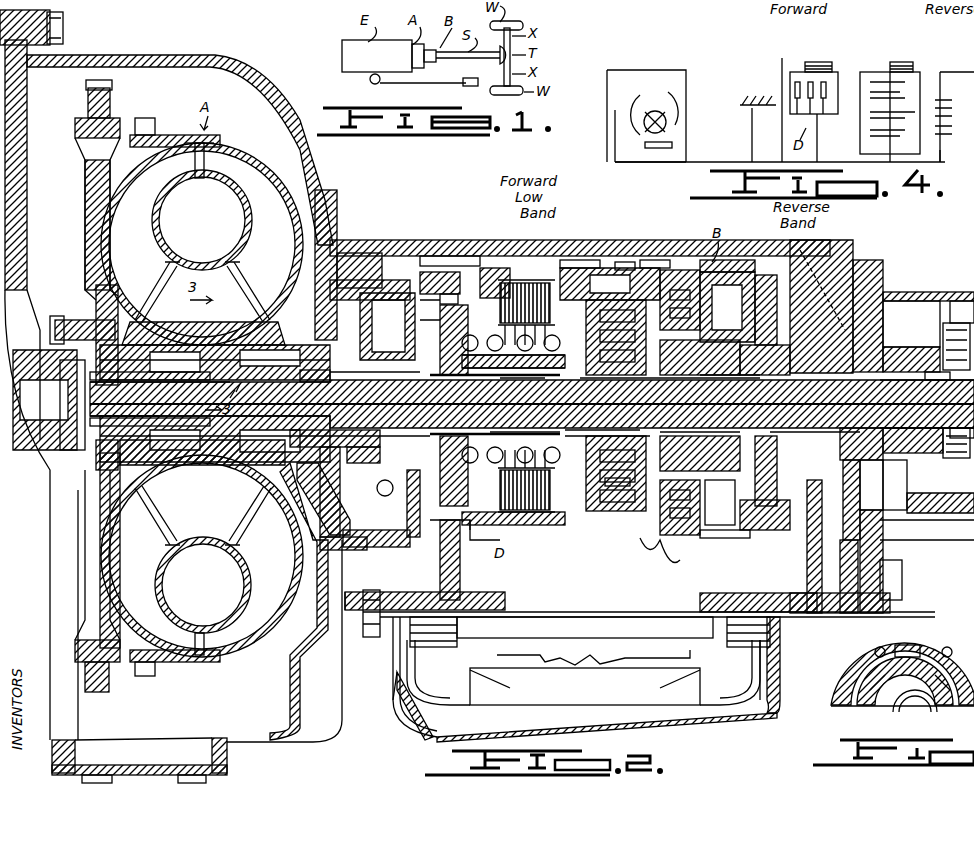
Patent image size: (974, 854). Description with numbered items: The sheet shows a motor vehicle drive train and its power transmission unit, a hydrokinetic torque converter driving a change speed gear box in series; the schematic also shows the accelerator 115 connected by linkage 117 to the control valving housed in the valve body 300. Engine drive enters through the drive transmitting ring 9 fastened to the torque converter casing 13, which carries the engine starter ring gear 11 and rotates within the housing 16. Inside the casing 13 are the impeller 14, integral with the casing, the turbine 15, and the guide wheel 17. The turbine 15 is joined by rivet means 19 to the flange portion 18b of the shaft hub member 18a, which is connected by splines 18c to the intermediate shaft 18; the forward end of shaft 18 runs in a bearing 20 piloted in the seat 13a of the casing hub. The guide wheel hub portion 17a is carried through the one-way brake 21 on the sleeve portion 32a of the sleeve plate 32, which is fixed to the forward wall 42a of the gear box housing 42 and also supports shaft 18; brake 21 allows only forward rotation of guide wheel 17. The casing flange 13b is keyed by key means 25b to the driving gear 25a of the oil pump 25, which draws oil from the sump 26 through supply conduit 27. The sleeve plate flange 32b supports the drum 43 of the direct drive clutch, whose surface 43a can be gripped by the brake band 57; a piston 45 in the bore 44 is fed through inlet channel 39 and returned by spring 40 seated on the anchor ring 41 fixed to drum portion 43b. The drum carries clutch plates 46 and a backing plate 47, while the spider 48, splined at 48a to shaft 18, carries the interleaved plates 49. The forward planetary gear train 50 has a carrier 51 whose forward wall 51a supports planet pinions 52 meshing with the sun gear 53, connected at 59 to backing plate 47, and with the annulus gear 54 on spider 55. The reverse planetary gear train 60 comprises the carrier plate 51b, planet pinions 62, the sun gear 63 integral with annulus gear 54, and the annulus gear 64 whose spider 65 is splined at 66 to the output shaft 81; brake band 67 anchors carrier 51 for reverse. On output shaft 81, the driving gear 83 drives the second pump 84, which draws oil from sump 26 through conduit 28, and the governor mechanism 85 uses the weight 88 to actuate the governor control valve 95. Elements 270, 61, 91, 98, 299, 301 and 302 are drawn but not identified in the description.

In FIG. 1, the engine starter 270 is at (372, 82).
In FIG. 1, the linkage 117 is at (420, 83).
In FIG. 1, the accelerator pedal 115 is at (472, 88).
In FIG. 4, the impeller 14 is at (670, 94).
In FIG. 2, the impeller 14 is at (268, 212).
In FIG. 4, the guide wheel 17 is at (655, 116).
In FIG. 2, the guide wheel 17 is at (212, 241).
In FIG. 4, the one-way brake device 21 is at (672, 146).
In FIG. 2, the one-way brake device 21 is at (185, 420).
In FIG. 4, the sleeve portion 32a is at (735, 130).
In FIG. 4, the intermediate shaft 18 is at (668, 160).
In FIG. 3, the intermediate shaft 18 is at (905, 706).
In FIG. 2, the intermediate shaft 18 is at (532, 404).
In FIG. 4, the brake band 57 is at (808, 60).
In FIG. 2, the brake band 57 is at (505, 268).
In FIG. 4, the backing plate 47 is at (826, 124).
In FIG. 2, the backing plate 47 is at (616, 486).
In FIG. 4, the planet pinion carrier 51 is at (870, 72).
In FIG. 2, the planet pinion carrier 51 is at (592, 295).
In FIG. 4, the forward planetary gear train 50 is at (883, 74).
In FIG. 2, the forward planetary gear train 50 is at (632, 310).
In FIG. 4, the brake band 67 is at (918, 62).
In FIG. 4, the annulus gear 54 is at (890, 92).
In FIG. 2, the annulus gear 54 is at (694, 486).
In FIG. 4, the planet pinion gears 52 is at (895, 114).
In FIG. 2, the planet pinion gears 52 is at (630, 388).
In FIG. 4, the sun gear element 53 is at (890, 136).
In FIG. 2, the sun gear element 53 is at (617, 473).
In FIG. 4, the annulus gear 64 is at (958, 60).
In FIG. 2, the annulus gear 64 is at (725, 543).
In FIG. 4, the planet pinion gears 62 is at (951, 117).
In FIG. 2, the planet pinion gears 62 is at (720, 388).
In FIG. 4, the sun gear element 63 is at (945, 162).
In FIG. 2, the sun gear element 63 is at (710, 502).
In FIG. 3, the guide wheel hub portion 17a is at (850, 655).
In FIG. 2, the guide wheel hub portion 17a is at (200, 300).
In FIG. 3, the sleeve plate 32 is at (940, 708).
In FIG. 2, the sleeve plate 32 is at (444, 330).
In FIG. 2, the engine starter ring gear 11 is at (95, 97).
In FIG. 2, the housing 16 is at (258, 70).
In FIG. 2, the turbine 15 is at (150, 188).
In FIG. 2, the torque converter casing 13 is at (100, 245).
In FIG. 2, the drive transmitting ring 9 is at (110, 310).
In FIG. 2, the bearing 20 is at (49, 400).
In FIG. 2, the shaft hub member 18a is at (160, 389).
In FIG. 2, the splines 18c is at (125, 407).
In FIG. 2, the sleeve-like flange portion 13b is at (322, 383).
In FIG. 2, the seat 13a is at (95, 462).
In FIG. 2, the flange portion 18b is at (95, 476).
In FIG. 2, the rivet means 19 is at (170, 478).
In FIG. 2, the second oil pump 84 is at (860, 258).
In FIG. 2, the governor mechanism 85 is at (940, 318).
In FIG. 2, the governor weight 88 is at (942, 336).
In FIG. 2, the oil pump 25 is at (352, 290).
In FIG. 2, the driving gear 25a is at (387, 326).
In FIG. 2, the gear box housing 42 is at (428, 256).
In FIG. 2, the forward wall 42a is at (450, 263).
In FIG. 2, the piston receiving bore 44 is at (450, 287).
In FIG. 2, the drum peripheral surface 43a is at (488, 275).
In FIG. 2, the spider element 48 is at (516, 364).
In FIG. 2, the carrier forward wall 51a is at (575, 296).
In FIG. 2, the planet pinion carrier plate 51b is at (660, 296).
In FIG. 2, the reverse planetary gear train 60 is at (690, 325).
In FIG. 2, the hub 61 is at (771, 325).
In FIG. 2, the key means 25b is at (375, 385).
In FIG. 2, the sleeve-like flange 32b is at (380, 418).
In FIG. 2, the spring 40 is at (495, 383).
In FIG. 2, the inlet channel 39 is at (490, 436).
In FIG. 2, the anchor ring 41 is at (522, 384).
In FIG. 2, the drum portion 43b is at (525, 416).
In FIG. 2, the splines 48a is at (602, 415).
In FIG. 2, the drive connection 59 is at (607, 418).
In FIG. 2, the spider element 55 is at (700, 416).
In FIG. 2, the supply conduit 27 is at (430, 570).
In FIG. 2, the splines 66 is at (815, 418).
In FIG. 2, the pump driving gear 83 is at (927, 384).
In FIG. 2, the ring 91 is at (940, 382).
In FIG. 2, the output shaft 81 is at (927, 414).
In FIG. 2, the seal 98 is at (959, 421).
In FIG. 2, the governor control valve 95 is at (950, 462).
In FIG. 2, the clutch drum 43 is at (410, 500).
In FIG. 2, the piston 45 is at (406, 513).
In FIG. 2, the clutch plates 46 is at (514, 492).
In FIG. 2, the spider element 65 is at (778, 506).
In FIG. 2, the valve body 300 is at (682, 558).
In FIG. 2, the clutch plates 49 is at (481, 538).
In FIG. 2, the conduit 28 is at (745, 588).
In FIG. 2, the oil pan 302 is at (782, 660).
In FIG. 2, the pan rail 301 is at (585, 627).
In FIG. 2, the pan bottom 299 is at (570, 702).
In FIG. 2, the oil sump 26 is at (440, 722).